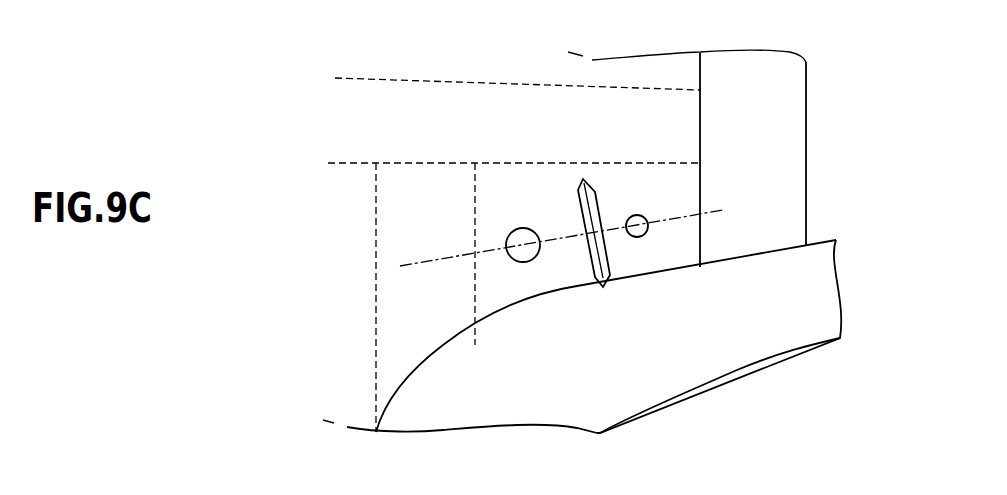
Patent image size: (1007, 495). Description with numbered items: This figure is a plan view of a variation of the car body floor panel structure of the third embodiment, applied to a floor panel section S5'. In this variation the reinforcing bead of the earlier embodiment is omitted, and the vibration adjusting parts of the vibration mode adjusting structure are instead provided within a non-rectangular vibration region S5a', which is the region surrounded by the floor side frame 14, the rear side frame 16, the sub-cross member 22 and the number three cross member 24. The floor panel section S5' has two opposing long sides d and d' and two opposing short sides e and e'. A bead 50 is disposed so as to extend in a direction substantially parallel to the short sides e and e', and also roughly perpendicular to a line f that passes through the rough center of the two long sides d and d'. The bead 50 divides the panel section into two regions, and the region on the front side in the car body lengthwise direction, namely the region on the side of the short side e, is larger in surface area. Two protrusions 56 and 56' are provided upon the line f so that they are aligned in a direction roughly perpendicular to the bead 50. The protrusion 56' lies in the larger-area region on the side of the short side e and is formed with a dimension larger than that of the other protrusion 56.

The floor side frame 14 is at (370, 78).
The rear side frame 16 is at (733, 368).
The sub-cross member 22 is at (375, 249).
The No. 3 cross member 24 is at (806, 127).
The bead 50 is at (623, 287).
The protrusion 56 is at (630, 177).
The protrusion 56' is at (544, 190).
The long side d is at (514, 133).
The long side d' is at (681, 354).
The short side e is at (368, 271).
The short side e' is at (777, 204).
The line f is at (400, 266).
The non-rectangular vibration region S5a' is at (371, 189).
The floor panel section S5' is at (377, 299).